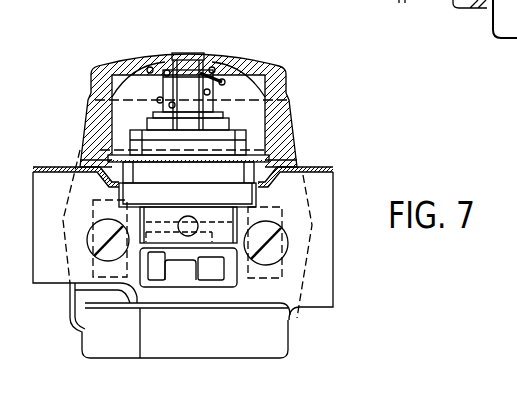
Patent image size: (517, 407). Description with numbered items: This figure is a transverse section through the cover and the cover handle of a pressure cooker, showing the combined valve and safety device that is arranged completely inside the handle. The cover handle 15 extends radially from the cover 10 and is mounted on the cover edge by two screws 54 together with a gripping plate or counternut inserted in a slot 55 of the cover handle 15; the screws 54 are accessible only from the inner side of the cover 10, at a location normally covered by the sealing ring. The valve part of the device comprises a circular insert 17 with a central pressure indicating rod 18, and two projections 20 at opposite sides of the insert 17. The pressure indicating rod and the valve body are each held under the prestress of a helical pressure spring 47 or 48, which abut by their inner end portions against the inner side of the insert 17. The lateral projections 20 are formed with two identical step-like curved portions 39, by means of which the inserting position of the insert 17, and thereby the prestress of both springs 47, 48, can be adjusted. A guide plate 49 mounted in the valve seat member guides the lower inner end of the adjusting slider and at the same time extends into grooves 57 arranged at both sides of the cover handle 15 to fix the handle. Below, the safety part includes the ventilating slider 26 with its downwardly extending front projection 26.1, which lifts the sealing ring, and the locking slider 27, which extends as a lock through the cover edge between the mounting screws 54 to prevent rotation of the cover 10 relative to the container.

The cover 10 is at (324, 170).
The cover handle 15 is at (291, 152).
The insert 17 is at (233, 63).
The pressure indicating rod 18 is at (182, 65).
The projections 20 is at (110, 97).
The ventilating slider 26 is at (138, 290).
The front projection 26.1 is at (157, 272).
The locking slider 27 is at (212, 280).
The step-like curved portions 39 is at (88, 100).
The helical pressure spring 47 is at (165, 70).
The helical pressure spring 48 is at (160, 100).
The guide plate 49 is at (90, 135).
The screws 54 is at (100, 233).
The slot 55 is at (490, 12).
The grooves 57 is at (92, 165).